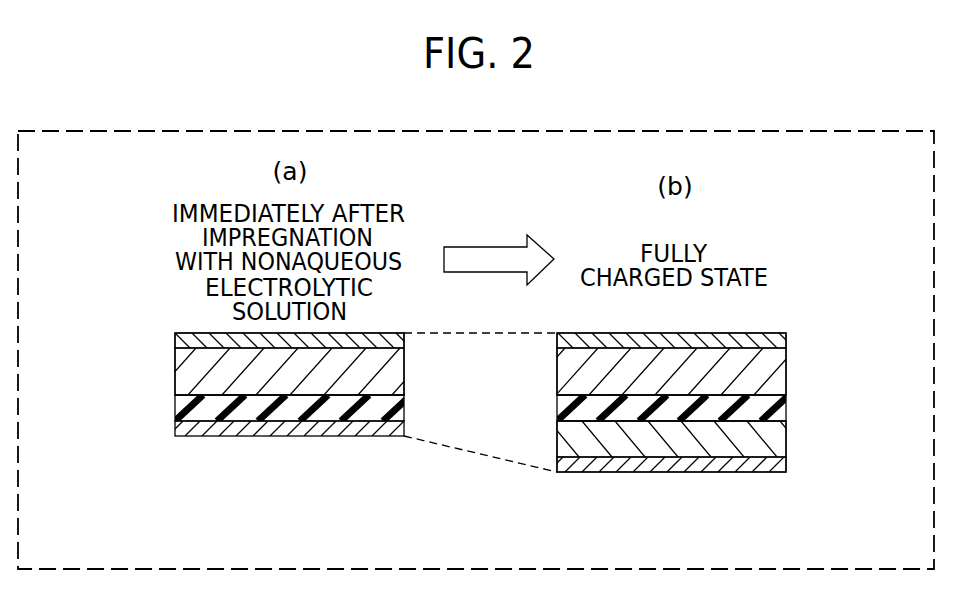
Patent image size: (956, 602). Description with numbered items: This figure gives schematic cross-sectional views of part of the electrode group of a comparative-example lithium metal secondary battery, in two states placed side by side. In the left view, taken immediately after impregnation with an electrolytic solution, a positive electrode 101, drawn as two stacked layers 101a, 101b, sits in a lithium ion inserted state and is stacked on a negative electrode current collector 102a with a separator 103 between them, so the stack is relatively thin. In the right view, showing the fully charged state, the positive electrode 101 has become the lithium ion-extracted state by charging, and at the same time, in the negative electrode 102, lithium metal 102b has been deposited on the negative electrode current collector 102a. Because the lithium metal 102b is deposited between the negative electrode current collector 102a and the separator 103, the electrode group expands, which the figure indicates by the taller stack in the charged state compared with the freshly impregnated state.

The positive electrode 101 is at (77, 310).
The positive electrode current collector 101a is at (187, 342).
The positive electrode active material layer 101b is at (187, 366).
The negative electrode 102 is at (875, 427).
The negative electrode current collector 102a is at (193, 426).
The lithium metal 102b is at (770, 438).
The separator 103 is at (203, 408).